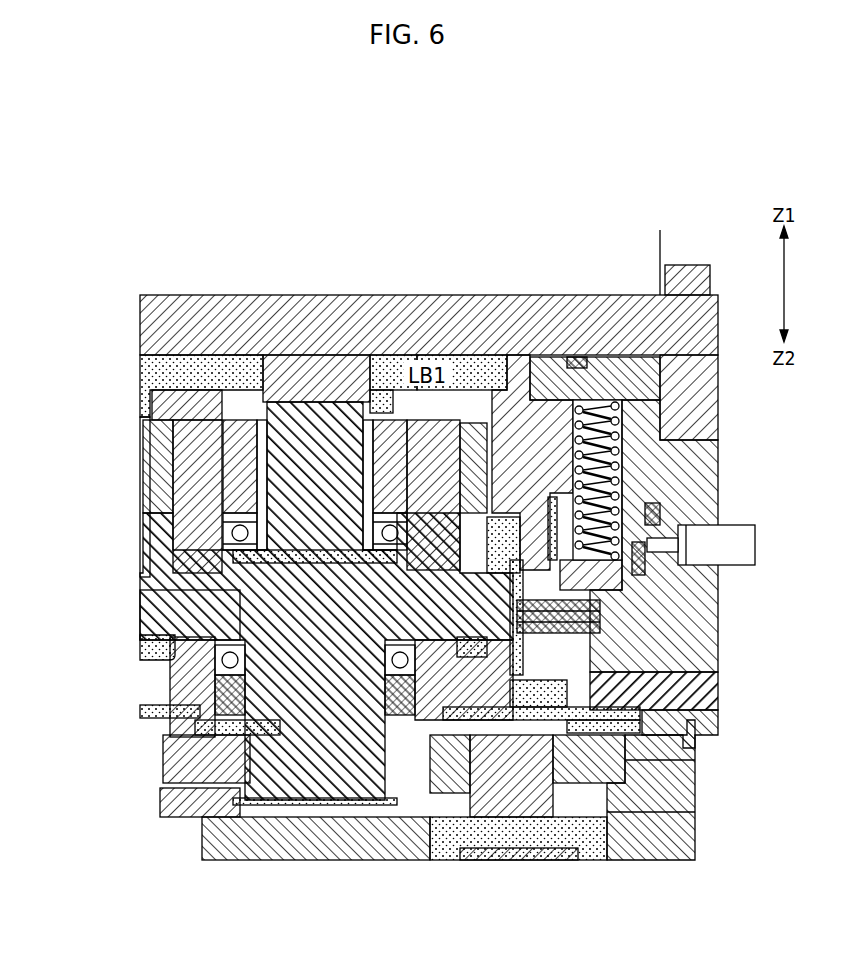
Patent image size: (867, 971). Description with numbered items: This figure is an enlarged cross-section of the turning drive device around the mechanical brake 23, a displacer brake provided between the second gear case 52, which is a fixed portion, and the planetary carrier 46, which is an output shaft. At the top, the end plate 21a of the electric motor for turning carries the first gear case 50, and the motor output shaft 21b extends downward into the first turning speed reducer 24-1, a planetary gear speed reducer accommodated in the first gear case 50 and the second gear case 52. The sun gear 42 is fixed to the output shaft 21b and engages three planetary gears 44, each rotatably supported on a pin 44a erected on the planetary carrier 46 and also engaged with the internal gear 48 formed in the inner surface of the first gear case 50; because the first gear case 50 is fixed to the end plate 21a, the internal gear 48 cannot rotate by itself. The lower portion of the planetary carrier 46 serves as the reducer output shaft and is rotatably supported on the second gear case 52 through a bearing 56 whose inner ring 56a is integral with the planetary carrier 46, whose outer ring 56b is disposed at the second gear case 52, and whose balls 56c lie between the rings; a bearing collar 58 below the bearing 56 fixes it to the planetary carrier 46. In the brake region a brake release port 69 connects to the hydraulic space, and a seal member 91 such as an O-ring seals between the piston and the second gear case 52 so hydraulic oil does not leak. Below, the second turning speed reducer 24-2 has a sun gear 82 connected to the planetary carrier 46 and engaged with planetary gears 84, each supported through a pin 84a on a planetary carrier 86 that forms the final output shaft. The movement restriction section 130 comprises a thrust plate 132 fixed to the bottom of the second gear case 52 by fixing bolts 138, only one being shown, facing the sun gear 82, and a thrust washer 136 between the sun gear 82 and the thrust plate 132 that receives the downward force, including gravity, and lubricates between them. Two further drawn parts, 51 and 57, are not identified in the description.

The end plate 21a is at (713, 325).
The output shaft 21b is at (318, 665).
The mechanical brake 23 is at (612, 614).
The first turning speed reducer 24-1 is at (263, 369).
The second turning speed reducer 24-2 is at (619, 790).
The sun gear 42 is at (250, 415).
The planetary gear 44 is at (163, 447).
The pin 44a is at (193, 407).
The planetary carrier 46 is at (262, 413).
The internal gear 48 is at (127, 440).
The first gear case 50 is at (713, 400).
The inner sleeve 51 is at (393, 420).
The second gear case 52 is at (712, 587).
The bearing 56 is at (229, 748).
The inner ring 56a is at (225, 620).
The outer ring 56b is at (150, 642).
The balls 56c is at (222, 650).
The bearing ring 57 is at (208, 700).
The bearing collar 58 is at (277, 860).
The brake release port 69 is at (747, 547).
The sun gear 82 is at (693, 767).
The planetary gear 84 is at (695, 792).
The pin 84a is at (693, 812).
The planetary carrier 86 is at (592, 838).
The seal member 91 is at (662, 514).
The movement restriction section 130 is at (175, 760).
The thrust plate 132 is at (197, 713).
The thrust washer 136 is at (240, 860).
The fixing bolt 138 is at (203, 728).